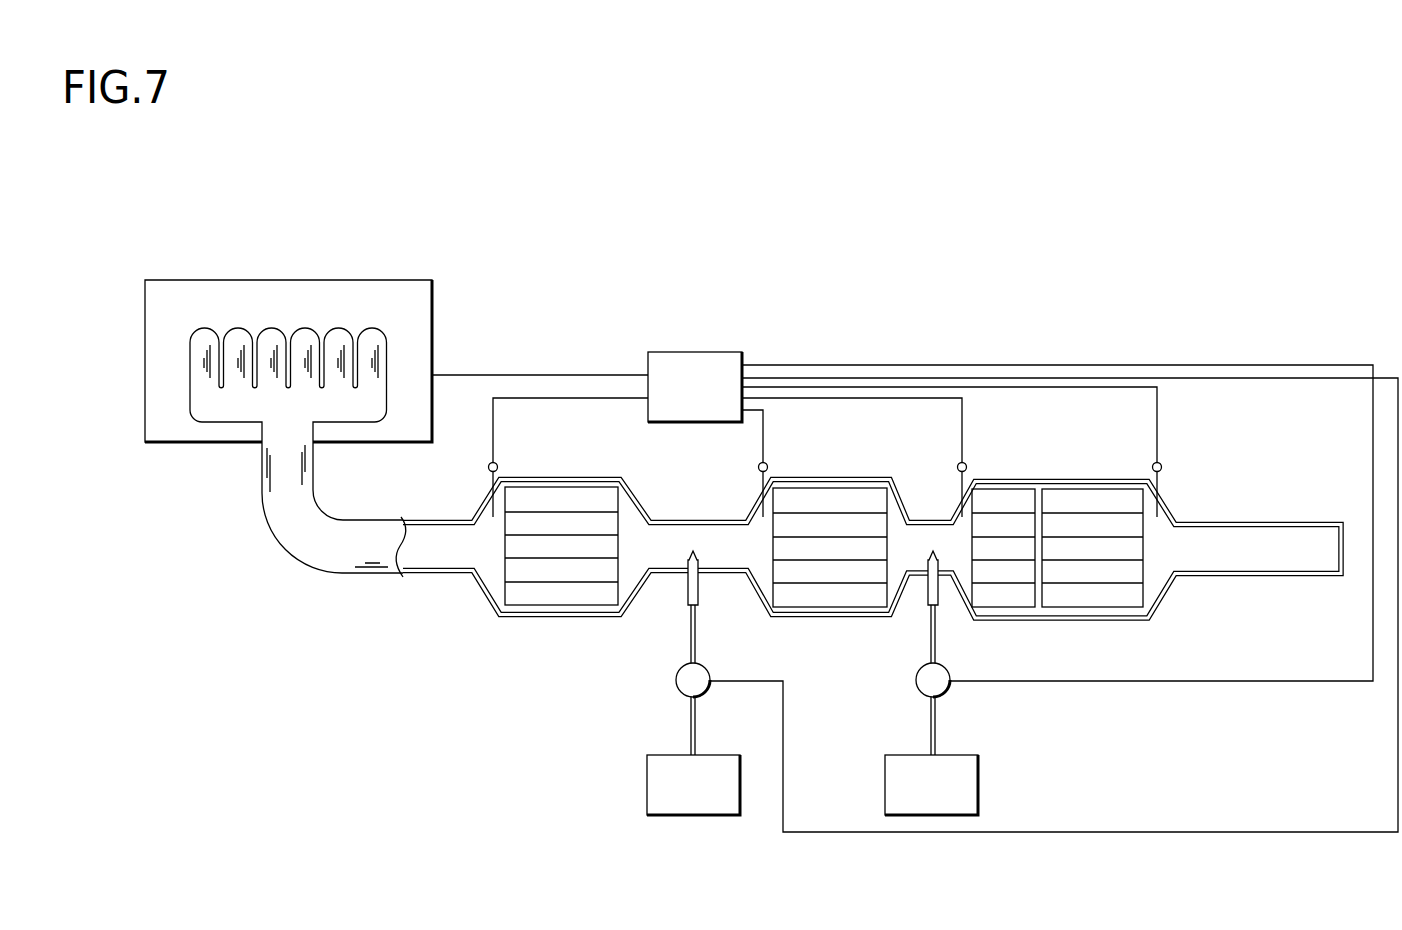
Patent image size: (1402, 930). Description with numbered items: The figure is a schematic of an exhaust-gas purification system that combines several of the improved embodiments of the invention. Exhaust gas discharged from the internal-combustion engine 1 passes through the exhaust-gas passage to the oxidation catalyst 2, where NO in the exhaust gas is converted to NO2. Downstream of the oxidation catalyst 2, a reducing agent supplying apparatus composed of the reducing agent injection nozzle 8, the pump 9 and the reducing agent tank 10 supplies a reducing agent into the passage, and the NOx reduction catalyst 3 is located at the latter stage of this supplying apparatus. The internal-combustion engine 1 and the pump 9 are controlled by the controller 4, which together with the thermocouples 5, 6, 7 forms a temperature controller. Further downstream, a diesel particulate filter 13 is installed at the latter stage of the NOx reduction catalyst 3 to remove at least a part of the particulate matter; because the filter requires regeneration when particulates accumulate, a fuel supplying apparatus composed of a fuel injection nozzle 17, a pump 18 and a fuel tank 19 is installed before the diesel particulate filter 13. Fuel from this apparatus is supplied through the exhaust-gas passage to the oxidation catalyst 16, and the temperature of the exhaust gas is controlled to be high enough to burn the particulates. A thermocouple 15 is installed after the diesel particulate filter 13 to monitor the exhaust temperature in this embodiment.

The internal-combustion engine 1 is at (408, 280).
The oxidation catalyst 2 is at (565, 618).
The NOx reduction catalyst 3 is at (805, 618).
The controller 4 is at (724, 352).
The thermocouple 5 is at (489, 465).
The thermocouple 6 is at (759, 465).
The thermocouple 7 is at (958, 465).
The reducing agent injection nozzle 8 is at (686, 588).
The pump 9 is at (676, 684).
The reducing agent tank 10 is at (647, 785).
The diesel particulate filter 13 is at (1088, 620).
The thermocouple 15 is at (1152, 466).
The oxidation catalyst 16 is at (1000, 620).
The fuel injection nozzle 17 is at (925, 605).
The pump 18 is at (916, 684).
The fuel tank 19 is at (885, 785).